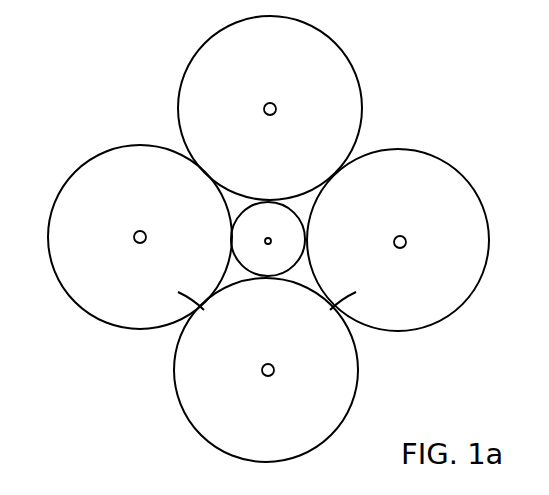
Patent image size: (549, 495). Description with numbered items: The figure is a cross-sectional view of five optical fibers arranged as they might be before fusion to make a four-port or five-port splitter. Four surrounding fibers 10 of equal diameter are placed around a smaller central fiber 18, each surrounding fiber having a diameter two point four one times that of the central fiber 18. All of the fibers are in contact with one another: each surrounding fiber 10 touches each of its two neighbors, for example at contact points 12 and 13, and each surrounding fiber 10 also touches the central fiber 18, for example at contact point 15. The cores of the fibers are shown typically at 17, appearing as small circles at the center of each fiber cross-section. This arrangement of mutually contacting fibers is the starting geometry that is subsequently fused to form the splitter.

The surrounding fibers 10 is at (300, 44).
The cores 17 is at (276, 108).
The central fiber 18 is at (260, 217).
The contact point between surrounding fiber and central fiber 15 is at (258, 277).
The contact point between neighboring surrounding fibers 12 is at (190, 317).
The contact point between neighboring surrounding fibers 13 is at (340, 317).